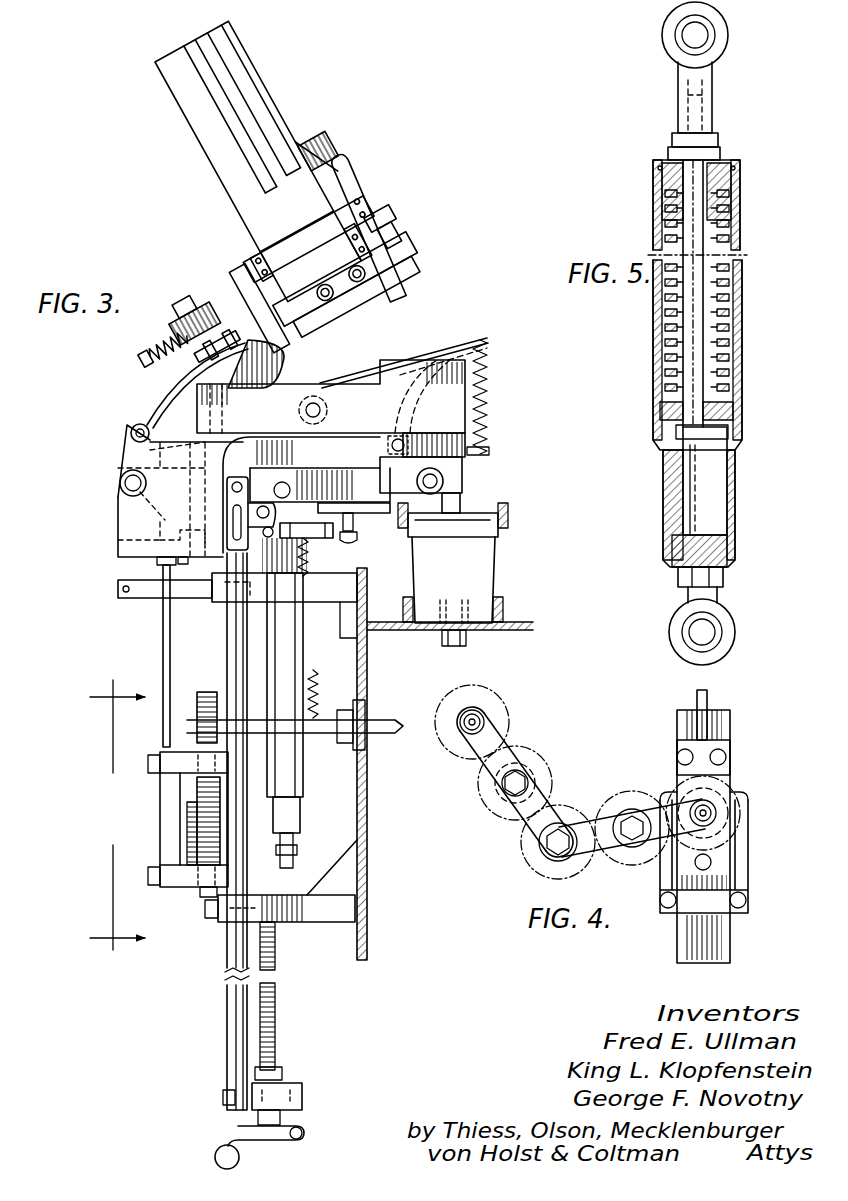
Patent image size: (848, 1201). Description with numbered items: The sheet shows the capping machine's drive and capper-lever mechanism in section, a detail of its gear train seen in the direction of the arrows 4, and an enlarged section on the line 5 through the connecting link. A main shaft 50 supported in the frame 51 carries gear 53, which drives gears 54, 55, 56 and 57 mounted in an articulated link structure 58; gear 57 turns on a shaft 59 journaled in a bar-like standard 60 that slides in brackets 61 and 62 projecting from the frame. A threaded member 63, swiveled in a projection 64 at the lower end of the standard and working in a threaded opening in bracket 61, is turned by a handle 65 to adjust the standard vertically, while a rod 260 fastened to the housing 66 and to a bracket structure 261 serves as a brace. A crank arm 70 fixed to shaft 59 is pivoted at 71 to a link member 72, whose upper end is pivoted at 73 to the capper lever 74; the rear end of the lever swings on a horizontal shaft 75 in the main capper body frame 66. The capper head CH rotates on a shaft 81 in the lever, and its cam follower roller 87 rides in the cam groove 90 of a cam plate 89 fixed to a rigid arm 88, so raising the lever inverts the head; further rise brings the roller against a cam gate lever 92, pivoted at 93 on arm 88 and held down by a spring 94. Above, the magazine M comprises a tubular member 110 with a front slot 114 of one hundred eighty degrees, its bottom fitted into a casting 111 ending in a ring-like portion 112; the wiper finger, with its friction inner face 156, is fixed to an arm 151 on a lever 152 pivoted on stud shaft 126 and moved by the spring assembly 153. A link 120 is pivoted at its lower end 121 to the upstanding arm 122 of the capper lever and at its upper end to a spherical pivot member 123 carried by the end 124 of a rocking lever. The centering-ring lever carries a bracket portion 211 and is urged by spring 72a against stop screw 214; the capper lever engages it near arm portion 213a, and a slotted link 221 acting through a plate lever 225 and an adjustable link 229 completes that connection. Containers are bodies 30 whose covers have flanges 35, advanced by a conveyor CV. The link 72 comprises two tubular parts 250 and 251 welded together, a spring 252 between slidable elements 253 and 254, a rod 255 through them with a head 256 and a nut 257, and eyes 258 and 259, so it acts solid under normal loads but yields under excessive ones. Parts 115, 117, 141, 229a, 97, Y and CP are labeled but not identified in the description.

In FIG. 3, the tubular member 110 is at (222, 178).
In FIG. 3, the casting 111 is at (292, 232).
In FIG. 3, the ring-like portion 112 is at (336, 314).
In FIG. 3, the slot 114 is at (313, 177).
In FIG. 3, the rod 115 is at (255, 90).
In FIG. 3, the knurled cap 117 is at (338, 121).
In FIG. 3, the link 120 is at (182, 372).
In FIG. 3, the lower end 121 is at (132, 430).
In FIG. 3, the upstanding arm portion 122 is at (122, 448).
In FIG. 3, the spherical pivot member 123 is at (262, 350).
In FIG. 3, the lever end 124 is at (220, 330).
In FIG. 3, the stud shaft 126 is at (184, 312).
In FIG. 3, the nuts 141 is at (342, 285).
In FIG. 3, the arm 151 is at (392, 231).
In FIG. 3, the lever 152 is at (312, 258).
In FIG. 3, the spring assembly 153 is at (165, 336).
In FIG. 3, the inner face portion 156 is at (345, 163).
In FIG. 3, the bracket portion 211 is at (222, 418).
In FIG. 3, the arm portion 213a is at (354, 500).
In FIG. 3, the stop screw 214 is at (161, 535).
In FIG. 3, the link 221 is at (254, 510).
In FIG. 3, the plate lever 225 is at (237, 570).
In FIG. 3, the adjustable link 229 is at (318, 538).
In FIG. 3, the plunger head 229a is at (369, 537).
In FIG. 3, the main capper body frame 66 is at (114, 516).
In FIG. 3, the pivot 73 is at (290, 480).
In FIG. 3, the capper lever 74 is at (348, 464).
In FIG. 3, the shaft 75 is at (120, 481).
In FIG. 3, the shaft 81 is at (416, 484).
In FIG. 3, the cam follower roller 87 is at (392, 438).
In FIG. 3, the rigid arm 88 is at (430, 408).
In FIG. 3, the cam plate 89 is at (392, 374).
In FIG. 3, the cam groove 90 is at (420, 372).
In FIG. 3, the cam gate lever 92 is at (366, 378).
In FIG. 3, the pivot 93 is at (321, 407).
In FIG. 3, the spring 94 is at (488, 376).
In FIG. 3, the hopper outlet 97 is at (445, 515).
In FIG. 3, the container body 30 is at (496, 578).
In FIG. 3, the annular flange 35 is at (490, 533).
In FIG. 3, the main shaft 50 is at (316, 733).
In FIG. 3, the frame 51 is at (357, 683).
In FIG. 3, the gear 53 is at (225, 715).
In FIG. 4, the gear 53 is at (446, 755).
In FIG. 4, the gear 54 is at (487, 809).
In FIG. 4, the gear 55 is at (526, 858).
In FIG. 4, the gear 56 is at (606, 858).
In FIG. 3, the gear 57 is at (208, 825).
In FIG. 4, the gear 57 is at (728, 790).
In FIG. 4, the articulated link structure 58 is at (592, 810).
In FIG. 4, the shaft 59 is at (708, 813).
In FIG. 3, the standard 60 is at (228, 655).
In FIG. 4, the standard 60 is at (731, 935).
In FIG. 3, the bracket 61 is at (322, 915).
In FIG. 3, the bracket 62 is at (322, 588).
In FIG. 3, the threaded member 63 is at (275, 970).
In FIG. 3, the projection 64 is at (300, 1096).
In FIG. 3, the handle 65 is at (238, 1157).
In FIG. 3, the crank arm 70 is at (262, 815).
In FIG. 3, the pivot 71 is at (299, 852).
In FIG. 3, the link member 72 is at (304, 672).
In FIG. 5, the link member 72 is at (750, 430).
In FIG. 3, the spring 72a is at (318, 692).
In FIG. 3, the rod 260 is at (160, 628).
In FIG. 4, the rod 260 is at (708, 693).
In FIG. 3, the bracket structure 261 is at (163, 890).
In FIG. 4, the bracket structure 261 is at (732, 760).
In FIG. 5, the tubular part 250 is at (654, 358).
In FIG. 5, the tubular part 251 is at (664, 484).
In FIG. 5, the spring 252 is at (722, 346).
In FIG. 5, the slidable element 253 is at (666, 411).
In FIG. 5, the slidable element 254 is at (741, 180).
In FIG. 5, the rod 255 is at (700, 376).
In FIG. 5, the head 256 is at (717, 462).
In FIG. 5, the nut 257 is at (724, 111).
In FIG. 5, the eye 258 is at (730, 40).
In FIG. 5, the eye 259 is at (678, 615).
In FIG. 3, the view arrows 4 is at (117, 818).
In FIG. 3, the section line 5 is at (298, 455).
In FIG. 3, the magazine M is at (198, 150).
In FIG. 3, the direction Y is at (390, 222).
In FIG. 3, the capper head CH is at (466, 478).
In FIG. 3, the cup CP is at (512, 508).
In FIG. 3, the conveyor CV is at (468, 640).